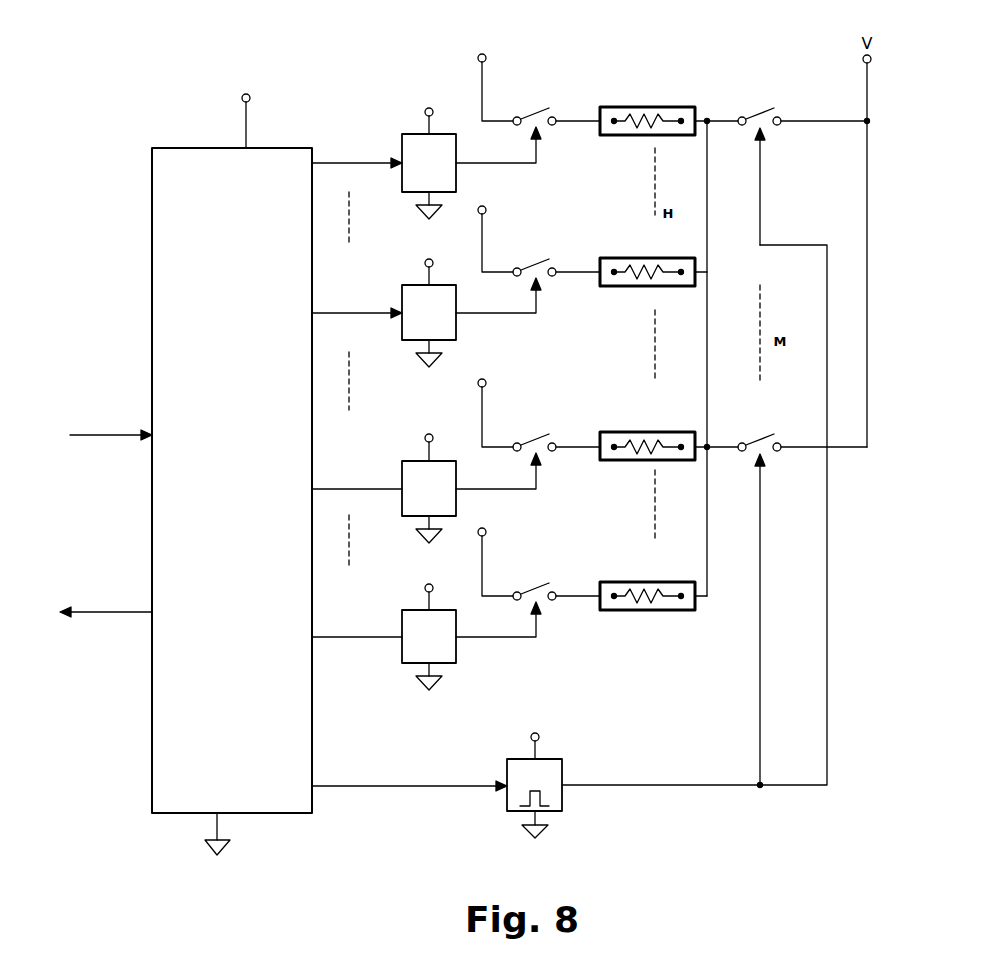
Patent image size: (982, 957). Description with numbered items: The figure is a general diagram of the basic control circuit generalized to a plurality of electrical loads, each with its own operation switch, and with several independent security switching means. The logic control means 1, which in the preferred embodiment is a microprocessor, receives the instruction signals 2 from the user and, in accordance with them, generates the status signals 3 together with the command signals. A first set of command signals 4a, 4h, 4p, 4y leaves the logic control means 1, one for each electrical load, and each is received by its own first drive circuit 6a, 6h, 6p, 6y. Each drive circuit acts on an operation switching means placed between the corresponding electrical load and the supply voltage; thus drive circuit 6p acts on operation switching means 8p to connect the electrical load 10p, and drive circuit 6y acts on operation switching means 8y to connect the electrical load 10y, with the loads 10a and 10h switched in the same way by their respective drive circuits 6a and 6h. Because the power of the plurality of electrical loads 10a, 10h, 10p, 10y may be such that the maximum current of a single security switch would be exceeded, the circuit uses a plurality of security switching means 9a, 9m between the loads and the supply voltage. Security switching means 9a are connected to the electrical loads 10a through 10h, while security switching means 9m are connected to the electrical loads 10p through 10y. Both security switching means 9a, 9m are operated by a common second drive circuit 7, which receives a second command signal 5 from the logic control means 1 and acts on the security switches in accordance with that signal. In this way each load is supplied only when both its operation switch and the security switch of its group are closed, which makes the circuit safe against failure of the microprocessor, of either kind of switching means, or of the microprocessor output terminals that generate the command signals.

The logic control means 1 is at (232, 462).
The instruction signals 2 is at (85, 422).
The status signals 3 is at (87, 587).
The command signal 4a is at (340, 148).
The command signal 4h is at (323, 300).
The command signal 4p is at (337, 474).
The command signal 4y is at (324, 623).
The second command signal 5 is at (455, 772).
The drive circuit 6a is at (471, 151).
The drive circuit 6h is at (471, 301).
The drive circuit 6p is at (471, 476).
The drive circuit 6y is at (471, 625).
The second drive circuit 7 is at (534, 773).
The operation switching means 8p is at (538, 405).
The operation switching means 8y is at (538, 554).
The security switching means 9a is at (781, 166).
The security switching means 9m is at (781, 599).
The electrical load 10a is at (647, 111).
The electrical load 10h is at (653, 262).
The electrical load 10p is at (647, 436).
The electrical load 10y is at (653, 586).